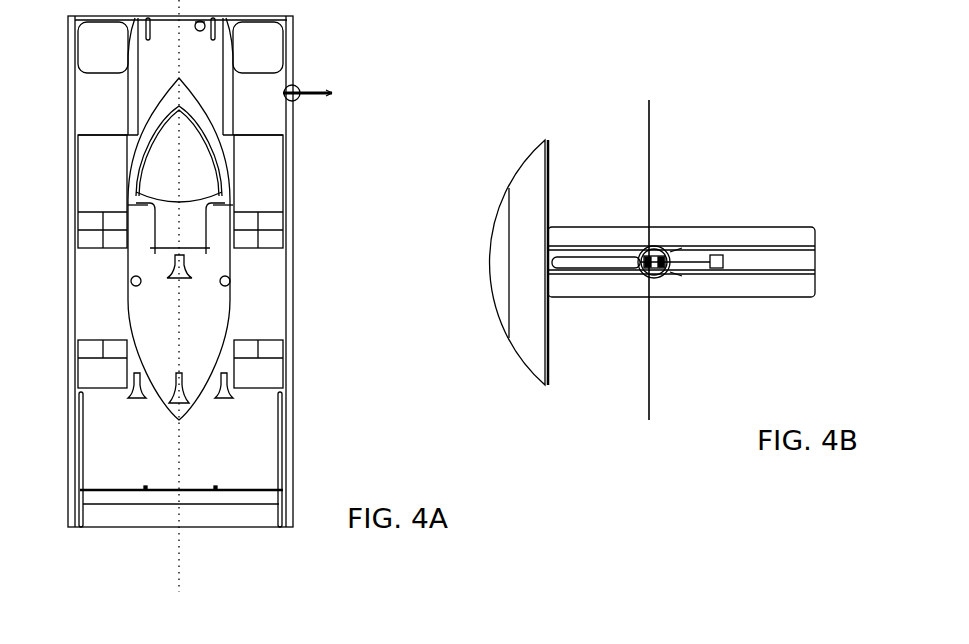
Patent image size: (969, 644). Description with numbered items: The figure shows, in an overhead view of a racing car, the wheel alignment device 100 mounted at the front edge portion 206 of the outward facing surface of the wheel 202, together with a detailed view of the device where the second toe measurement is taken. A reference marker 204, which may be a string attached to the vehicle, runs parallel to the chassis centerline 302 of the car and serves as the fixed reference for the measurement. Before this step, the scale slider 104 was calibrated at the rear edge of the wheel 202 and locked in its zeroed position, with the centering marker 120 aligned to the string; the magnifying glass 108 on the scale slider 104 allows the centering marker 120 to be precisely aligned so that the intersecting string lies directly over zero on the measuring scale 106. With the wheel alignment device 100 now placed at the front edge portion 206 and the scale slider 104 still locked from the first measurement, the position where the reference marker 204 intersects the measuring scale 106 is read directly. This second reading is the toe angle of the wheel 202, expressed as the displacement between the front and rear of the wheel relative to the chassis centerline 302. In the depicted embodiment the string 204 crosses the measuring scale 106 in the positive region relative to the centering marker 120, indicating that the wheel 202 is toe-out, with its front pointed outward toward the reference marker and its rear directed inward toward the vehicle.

In FIG. 4B, the wheel alignment device 100 is at (711, 262).
In FIG. 4B, the scale slider 104 is at (693, 268).
In FIG. 4B, the measuring scale 106 is at (632, 270).
In FIG. 4B, the magnifying glass 108 is at (643, 247).
In FIG. 4B, the centering marker 120 is at (656, 256).
In FIG. 4A, the wheel 202 is at (250, 137).
In FIG. 4B, the wheel 202 is at (486, 262).
In FIG. 4B, the reference marker 204 is at (648, 147).
In FIG. 4A, the front edge portion 206 is at (310, 105).
In FIG. 4A, the chassis centerline 302 is at (182, 304).